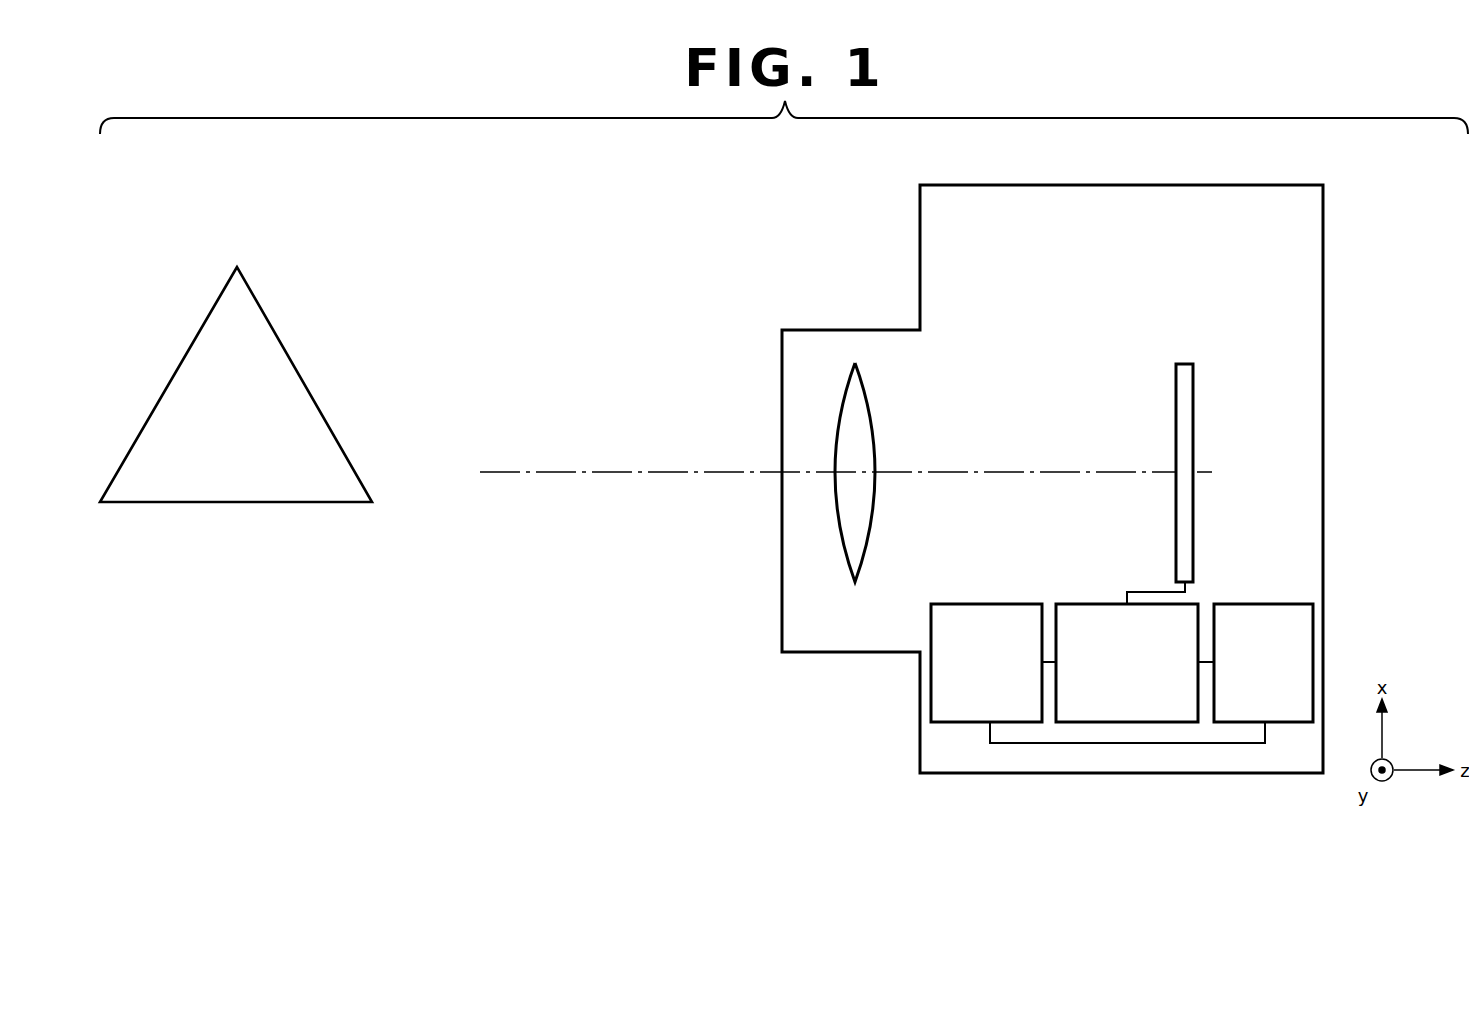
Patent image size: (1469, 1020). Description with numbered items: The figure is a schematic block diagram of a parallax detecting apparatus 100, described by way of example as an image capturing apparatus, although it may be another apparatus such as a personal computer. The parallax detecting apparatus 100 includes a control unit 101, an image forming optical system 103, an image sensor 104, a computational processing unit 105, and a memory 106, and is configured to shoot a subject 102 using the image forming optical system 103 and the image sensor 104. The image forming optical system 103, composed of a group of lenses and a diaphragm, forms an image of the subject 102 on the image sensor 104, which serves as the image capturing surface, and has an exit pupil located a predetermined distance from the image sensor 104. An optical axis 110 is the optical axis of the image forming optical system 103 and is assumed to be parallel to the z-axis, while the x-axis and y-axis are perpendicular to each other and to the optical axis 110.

The parallax detecting apparatus 100 is at (1325, 232).
The control unit 101 is at (962, 722).
The subject 102 is at (280, 347).
The image forming optical system 103 is at (856, 352).
The image sensor 104 is at (1195, 396).
The computational processing unit 105 is at (1148, 722).
The memory 106 is at (1285, 722).
The optical axis 110 is at (592, 468).